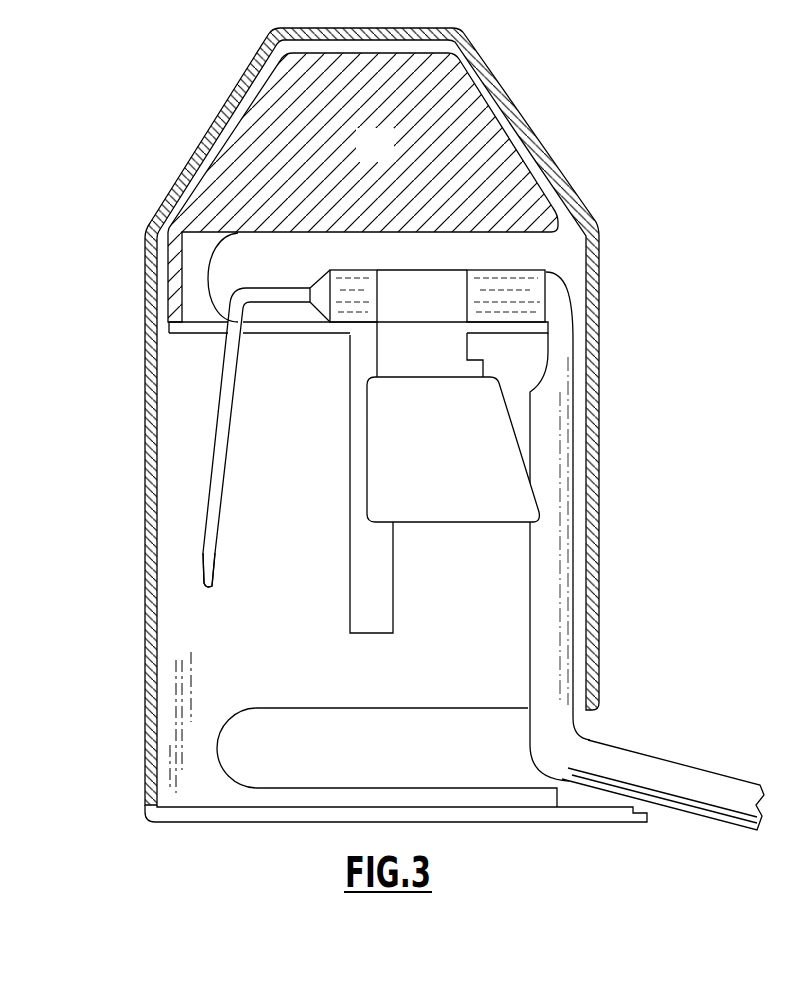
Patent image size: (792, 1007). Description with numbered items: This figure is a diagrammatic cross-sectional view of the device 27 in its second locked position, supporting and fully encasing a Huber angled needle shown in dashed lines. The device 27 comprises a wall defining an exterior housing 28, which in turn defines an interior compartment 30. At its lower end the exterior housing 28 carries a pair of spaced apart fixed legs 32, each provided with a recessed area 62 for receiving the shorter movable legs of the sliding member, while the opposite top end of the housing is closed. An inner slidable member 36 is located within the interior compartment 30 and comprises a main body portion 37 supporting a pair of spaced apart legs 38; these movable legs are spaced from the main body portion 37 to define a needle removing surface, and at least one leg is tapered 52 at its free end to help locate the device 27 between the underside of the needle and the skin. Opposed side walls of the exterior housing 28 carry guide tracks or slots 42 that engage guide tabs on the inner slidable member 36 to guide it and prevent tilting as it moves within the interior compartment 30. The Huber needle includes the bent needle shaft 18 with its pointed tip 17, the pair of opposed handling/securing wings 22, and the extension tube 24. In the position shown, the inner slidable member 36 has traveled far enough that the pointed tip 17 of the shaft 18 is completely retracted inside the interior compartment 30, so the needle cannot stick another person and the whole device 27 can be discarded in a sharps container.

The device 27 is at (423, 451).
The inner slidable member 36 is at (494, 95).
The main body portion 37 is at (390, 158).
The spaced apart legs 38 is at (528, 330).
The bent needle shaft 18 is at (231, 398).
The pointed tip 17 is at (207, 588).
The interior compartment 30 is at (288, 566).
The guide tracks or slots 42 is at (390, 584).
The handling/securing wings 22 is at (510, 467).
The tapered free end 52 is at (634, 812).
The extension tube 24 is at (690, 770).
The recessed area 62 is at (425, 798).
The fixed legs 32 is at (597, 823).
The exterior housing 28 is at (184, 620).